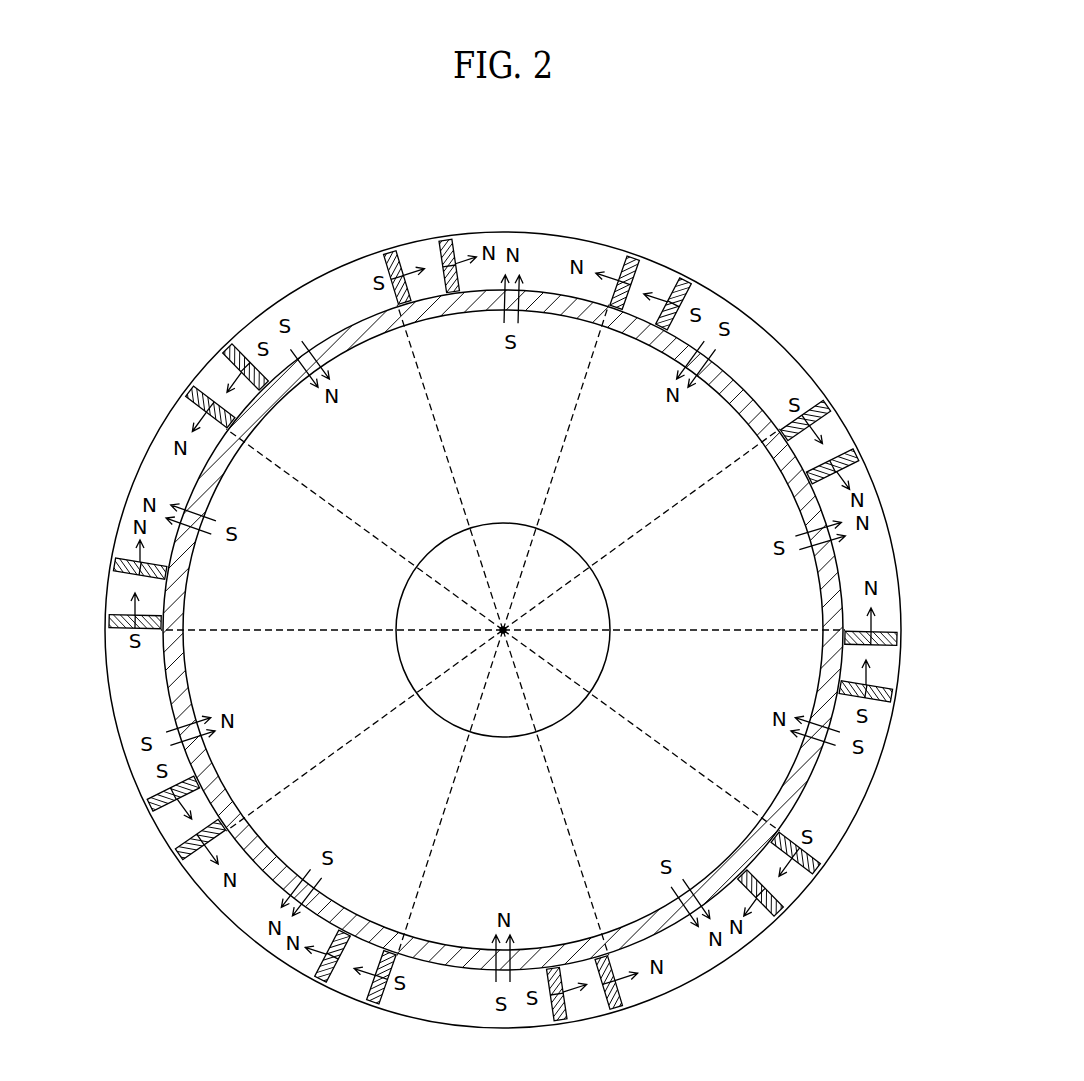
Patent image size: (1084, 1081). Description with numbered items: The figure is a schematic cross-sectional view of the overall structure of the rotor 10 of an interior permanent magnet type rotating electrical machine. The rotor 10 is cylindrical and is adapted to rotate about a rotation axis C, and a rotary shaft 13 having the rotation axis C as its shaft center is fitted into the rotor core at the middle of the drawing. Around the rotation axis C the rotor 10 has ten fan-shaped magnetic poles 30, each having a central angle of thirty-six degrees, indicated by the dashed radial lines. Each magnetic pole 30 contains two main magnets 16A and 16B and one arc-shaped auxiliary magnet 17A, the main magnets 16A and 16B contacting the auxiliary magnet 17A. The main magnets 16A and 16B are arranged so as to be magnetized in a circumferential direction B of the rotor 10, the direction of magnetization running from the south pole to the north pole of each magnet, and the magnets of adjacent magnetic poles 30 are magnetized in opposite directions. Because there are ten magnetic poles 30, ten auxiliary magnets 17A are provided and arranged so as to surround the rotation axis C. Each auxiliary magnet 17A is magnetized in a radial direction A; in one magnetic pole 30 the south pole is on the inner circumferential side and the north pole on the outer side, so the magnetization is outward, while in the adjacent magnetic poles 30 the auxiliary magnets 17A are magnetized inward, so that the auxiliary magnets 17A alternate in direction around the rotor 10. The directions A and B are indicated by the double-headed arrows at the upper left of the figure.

The rotor 10 is at (773, 215).
The rotary shaft 13 is at (553, 555).
The main magnet 16A is at (899, 639).
The main magnet 16B is at (893, 695).
The auxiliary magnet 17A is at (375, 330).
The magnetic pole 30 is at (884, 510).
The rotation axis C is at (505, 629).
The radial direction A is at (328, 197).
The circumferential direction B is at (342, 182).